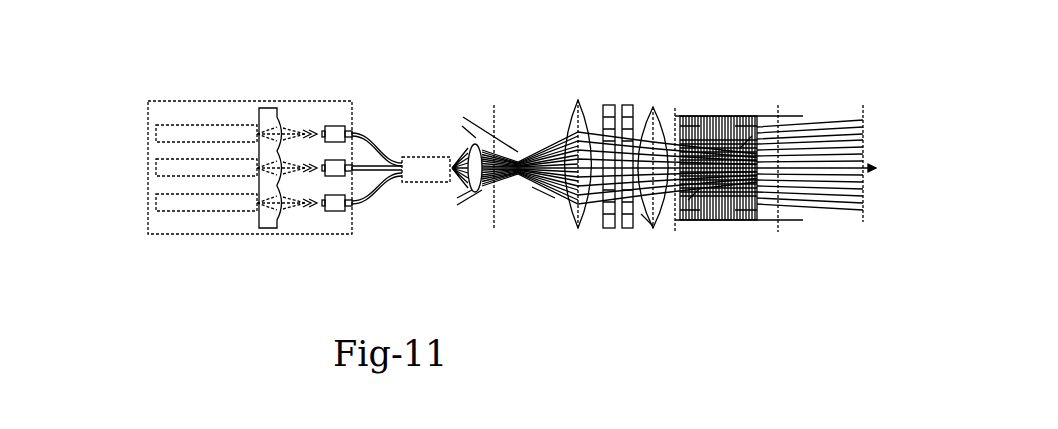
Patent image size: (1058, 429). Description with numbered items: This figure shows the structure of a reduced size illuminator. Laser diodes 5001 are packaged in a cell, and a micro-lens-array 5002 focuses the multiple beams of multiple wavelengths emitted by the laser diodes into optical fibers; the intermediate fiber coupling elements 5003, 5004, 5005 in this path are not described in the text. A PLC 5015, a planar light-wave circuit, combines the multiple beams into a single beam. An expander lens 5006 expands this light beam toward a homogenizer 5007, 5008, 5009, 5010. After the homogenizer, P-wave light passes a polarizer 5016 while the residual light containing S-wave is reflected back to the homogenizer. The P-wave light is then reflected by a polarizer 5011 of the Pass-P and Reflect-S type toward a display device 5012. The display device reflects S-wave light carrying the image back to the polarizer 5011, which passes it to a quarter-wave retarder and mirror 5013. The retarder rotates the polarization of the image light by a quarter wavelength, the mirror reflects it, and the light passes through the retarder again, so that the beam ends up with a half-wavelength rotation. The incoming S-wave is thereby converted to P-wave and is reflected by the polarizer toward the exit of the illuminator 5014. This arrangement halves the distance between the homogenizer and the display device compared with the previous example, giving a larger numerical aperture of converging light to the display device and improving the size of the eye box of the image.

The laser diodes 5001 is at (160, 205).
The micro-lens-array 5002 is at (272, 233).
The optical fiber coupling element 5003 is at (297, 130).
The optical fiber coupling element 5004 is at (327, 213).
The optical fiber coupling element 5005 is at (320, 112).
The expander lens 5006 is at (468, 143).
The homogenizer 5007 is at (578, 103).
The homogenizer 5008 is at (610, 103).
The homogenizer 5009 is at (635, 103).
The homogenizer 5010 is at (648, 218).
The polarizer 5011 is at (707, 217).
The display device 5012 is at (728, 112).
The quarter-wave retarder and mirror 5013 is at (737, 225).
The exit of illuminator 5014 is at (807, 183).
The PLC (planar light-wave circuit) 5015 is at (417, 180).
The polarizer 5016 is at (675, 230).